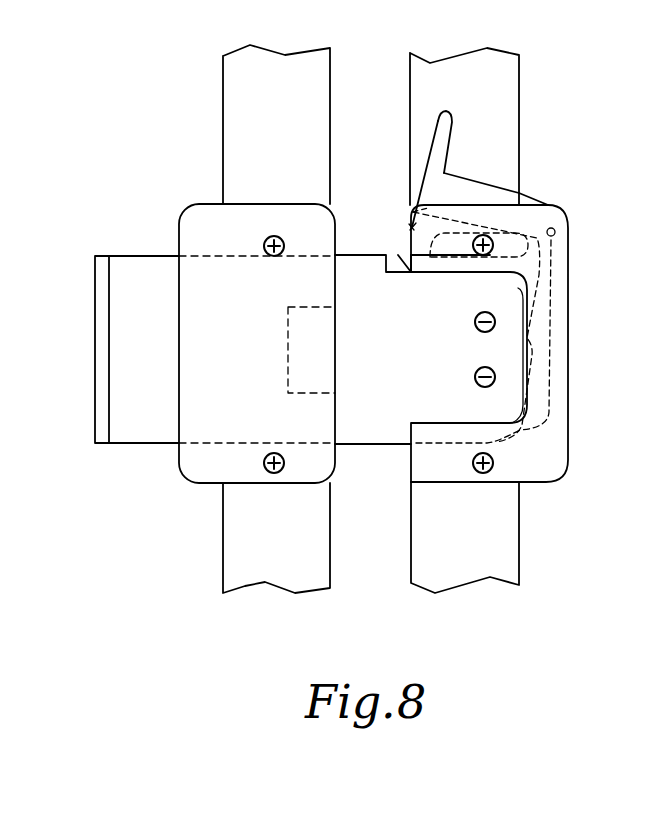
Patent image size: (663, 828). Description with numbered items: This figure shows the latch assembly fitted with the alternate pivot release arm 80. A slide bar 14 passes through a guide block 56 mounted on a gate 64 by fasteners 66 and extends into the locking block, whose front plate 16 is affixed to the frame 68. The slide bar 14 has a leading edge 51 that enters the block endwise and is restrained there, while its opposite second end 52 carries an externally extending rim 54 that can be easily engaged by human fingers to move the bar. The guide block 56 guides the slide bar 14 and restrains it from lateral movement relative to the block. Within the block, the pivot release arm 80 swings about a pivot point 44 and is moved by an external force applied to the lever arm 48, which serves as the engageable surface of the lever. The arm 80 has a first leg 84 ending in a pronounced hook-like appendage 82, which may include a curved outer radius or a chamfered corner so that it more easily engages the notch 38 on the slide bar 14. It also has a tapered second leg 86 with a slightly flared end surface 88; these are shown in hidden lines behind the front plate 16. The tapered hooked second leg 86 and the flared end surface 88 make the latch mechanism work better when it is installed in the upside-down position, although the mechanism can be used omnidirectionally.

The slide bar 14 is at (373, 430).
The front plate 16 is at (552, 452).
The notch 38 is at (392, 272).
The pivot pin 44 is at (557, 233).
The lever arm 48 is at (447, 153).
The leading edge 51 is at (525, 363).
The second end 52 is at (80, 353).
The externally extending rim 54 is at (98, 425).
The guide block 56 is at (221, 309).
The gate 64 is at (240, 102).
The fasteners 66 is at (273, 257).
The frame 68 is at (508, 93).
The pivot release arm 80 is at (480, 191).
The hook-like appendage 82 is at (408, 227).
The first leg 84 is at (430, 188).
The tapered second leg 86 is at (545, 279).
The flared end surface 88 is at (537, 337).